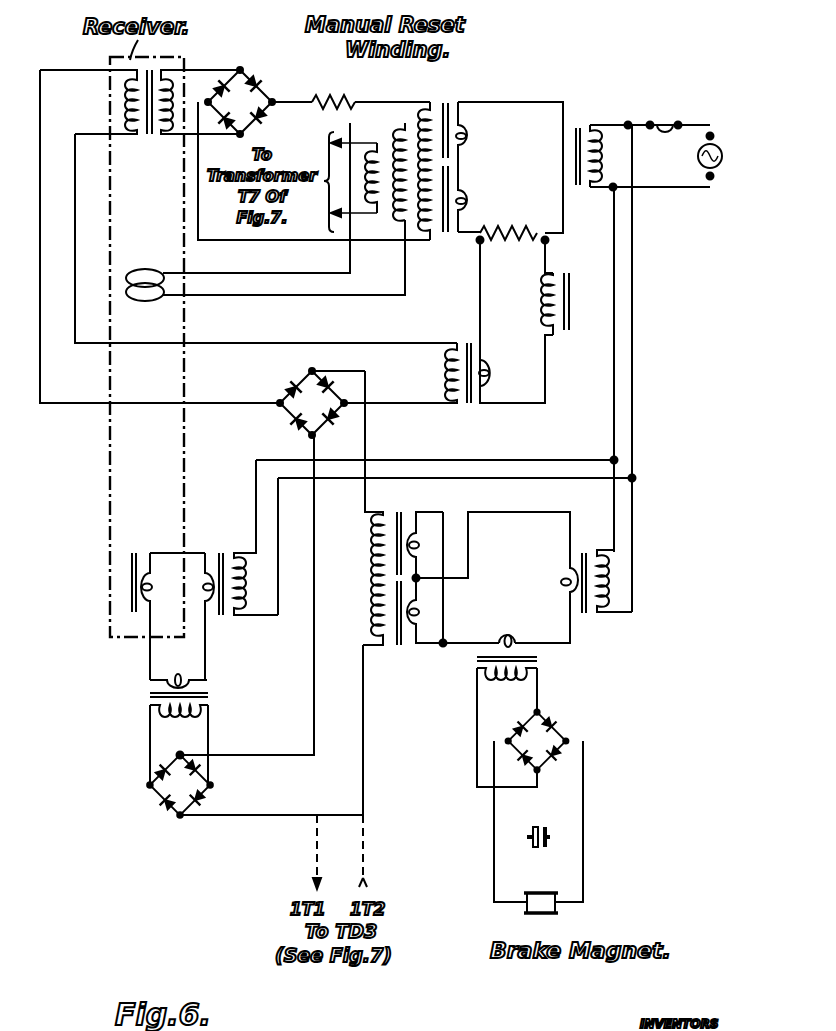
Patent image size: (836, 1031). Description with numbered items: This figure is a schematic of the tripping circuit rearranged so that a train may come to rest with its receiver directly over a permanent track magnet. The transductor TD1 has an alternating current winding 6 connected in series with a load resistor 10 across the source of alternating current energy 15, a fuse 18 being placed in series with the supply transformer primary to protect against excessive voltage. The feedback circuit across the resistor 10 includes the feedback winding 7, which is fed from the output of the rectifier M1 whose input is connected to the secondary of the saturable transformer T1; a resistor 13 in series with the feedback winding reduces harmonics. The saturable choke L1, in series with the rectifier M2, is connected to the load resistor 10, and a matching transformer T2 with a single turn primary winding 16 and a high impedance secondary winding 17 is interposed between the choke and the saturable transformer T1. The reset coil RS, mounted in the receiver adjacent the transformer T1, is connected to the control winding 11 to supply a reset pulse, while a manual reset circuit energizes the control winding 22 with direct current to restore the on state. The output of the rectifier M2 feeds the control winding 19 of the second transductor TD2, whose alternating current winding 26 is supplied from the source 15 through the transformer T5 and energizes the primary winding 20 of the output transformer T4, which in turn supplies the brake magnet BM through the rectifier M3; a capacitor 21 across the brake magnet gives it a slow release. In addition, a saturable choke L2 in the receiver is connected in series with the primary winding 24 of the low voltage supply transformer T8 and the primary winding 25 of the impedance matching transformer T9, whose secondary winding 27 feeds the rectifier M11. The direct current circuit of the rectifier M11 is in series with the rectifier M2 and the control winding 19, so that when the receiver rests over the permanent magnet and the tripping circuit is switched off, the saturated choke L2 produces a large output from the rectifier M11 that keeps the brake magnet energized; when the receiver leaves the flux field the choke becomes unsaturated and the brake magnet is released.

The saturable transformer T1 is at (149, 138).
The rectifier M1 is at (237, 78).
The resistor 13 is at (326, 100).
The feedback winding 7 is at (424, 235).
The control winding 11 is at (397, 230).
The control winding 22 is at (376, 212).
The transductor TD1 is at (447, 104).
The alternating current winding 6 is at (465, 197).
The resistor 10 is at (513, 227).
The saturable choke L1 is at (560, 274).
The primary winding 16 is at (489, 374).
The secondary winding 17 is at (444, 371).
The matching transformer T2 is at (469, 410).
The fuse 18 is at (662, 120).
The source of alternating current energy 15 is at (721, 150).
The reset coil RS is at (146, 267).
The rectifier M2 is at (287, 381).
The saturable choke L2 is at (136, 550).
The primary winding 24 is at (207, 598).
The primary winding 25 is at (185, 676).
The low voltage supply transformer T8 is at (222, 550).
The impedance matching transformer T9 is at (212, 697).
The secondary winding 27 is at (200, 714).
The rectifier M11 is at (205, 793).
The control winding 19 is at (372, 565).
The transductor TD2 is at (401, 650).
The alternating current winding 26 is at (418, 540).
The primary winding 20 is at (510, 636).
The transformer T5 is at (585, 551).
The output transformer T4 is at (540, 660).
The rectifier M3 is at (545, 716).
The capacitor 21 is at (537, 826).
The brake magnet BM is at (546, 936).